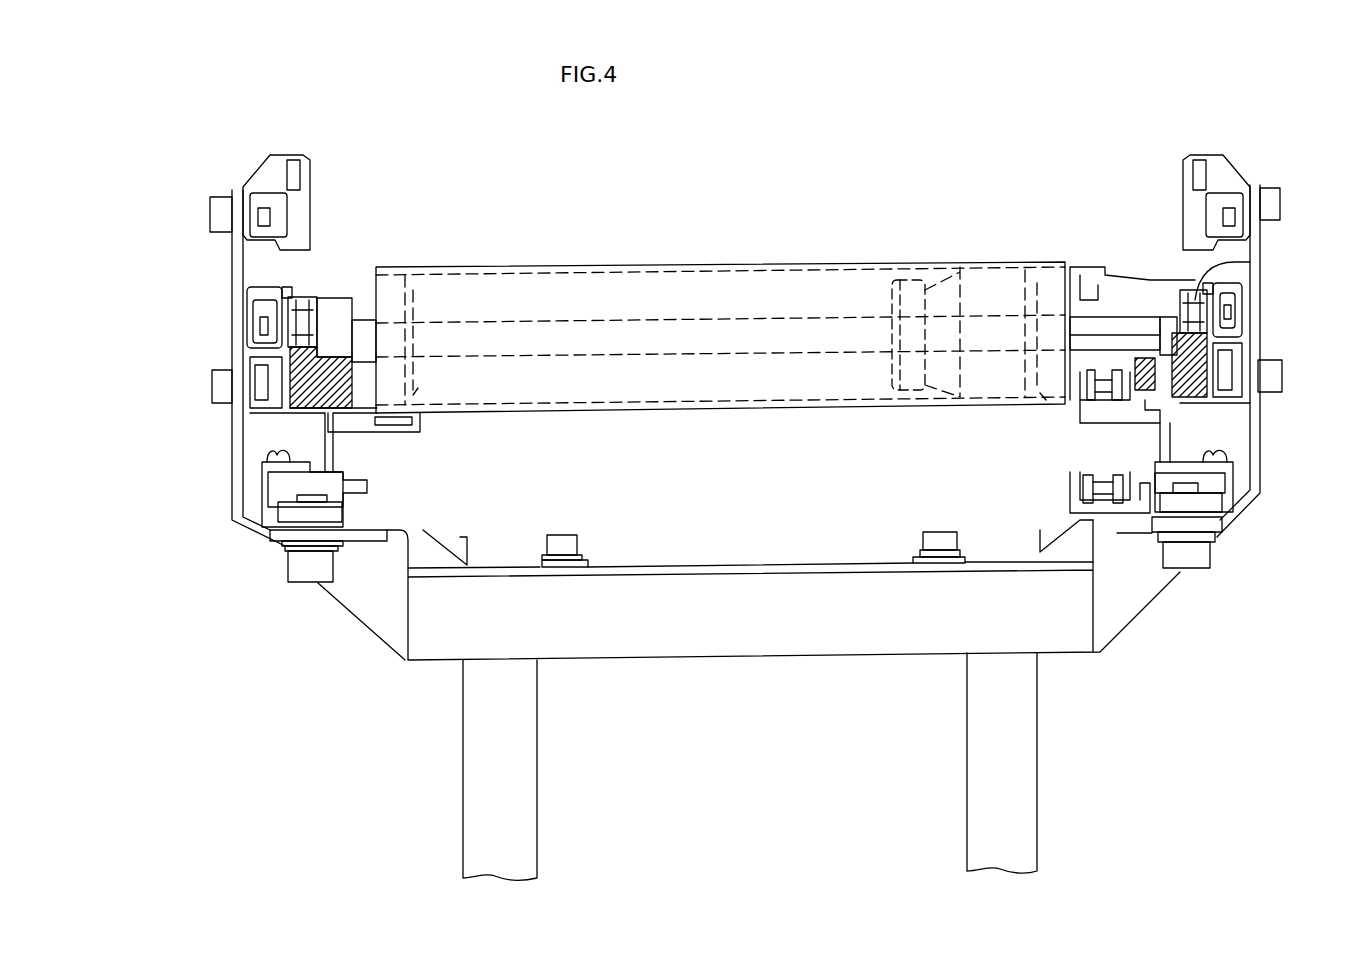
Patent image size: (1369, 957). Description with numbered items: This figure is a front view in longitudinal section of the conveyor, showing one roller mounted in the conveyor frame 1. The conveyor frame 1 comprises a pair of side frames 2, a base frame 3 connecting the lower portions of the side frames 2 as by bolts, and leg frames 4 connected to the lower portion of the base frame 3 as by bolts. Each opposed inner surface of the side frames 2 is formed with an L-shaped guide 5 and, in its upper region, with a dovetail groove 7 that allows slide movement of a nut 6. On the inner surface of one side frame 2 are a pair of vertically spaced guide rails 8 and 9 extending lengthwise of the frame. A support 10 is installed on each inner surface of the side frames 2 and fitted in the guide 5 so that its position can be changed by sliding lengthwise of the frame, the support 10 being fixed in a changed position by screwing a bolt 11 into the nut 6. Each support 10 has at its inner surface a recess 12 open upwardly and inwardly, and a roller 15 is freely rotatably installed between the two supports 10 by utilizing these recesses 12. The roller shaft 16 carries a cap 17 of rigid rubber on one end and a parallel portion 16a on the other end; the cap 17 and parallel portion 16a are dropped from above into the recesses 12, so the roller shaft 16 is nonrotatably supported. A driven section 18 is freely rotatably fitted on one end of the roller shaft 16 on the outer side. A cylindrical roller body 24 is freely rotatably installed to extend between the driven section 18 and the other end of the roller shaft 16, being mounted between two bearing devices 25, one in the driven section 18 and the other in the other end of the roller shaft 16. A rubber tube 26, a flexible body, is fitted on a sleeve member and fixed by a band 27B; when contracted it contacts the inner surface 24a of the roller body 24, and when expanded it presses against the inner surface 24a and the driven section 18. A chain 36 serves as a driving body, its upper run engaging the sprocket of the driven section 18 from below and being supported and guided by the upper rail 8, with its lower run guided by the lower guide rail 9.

The conveyor frame 1 is at (282, 553).
The side frame 2 is at (240, 478).
The base frame 3 is at (687, 652).
The leg frame 4 is at (516, 750).
The L-shaped guide 5 is at (300, 410).
The nut 6 is at (260, 343).
The dovetail groove 7 is at (258, 306).
The upper guide rail 8 is at (1080, 427).
The lower guide rail 9 is at (1103, 505).
The support 10 is at (270, 406).
The bolt 11 is at (300, 307).
The recess 12 is at (333, 298).
The roller 15 is at (730, 258).
The roller shaft 16 is at (613, 318).
The parallel portion 16a is at (333, 342).
The cap 17 is at (1160, 293).
The driven section 18 is at (1088, 297).
The cylindrical roller body 24 is at (775, 372).
The inner surface of the roller body 24a is at (838, 392).
The bearing device 25 is at (415, 396).
The rubber tube 26 is at (990, 276).
The band 27B is at (912, 392).
The chain 36 is at (1117, 500).